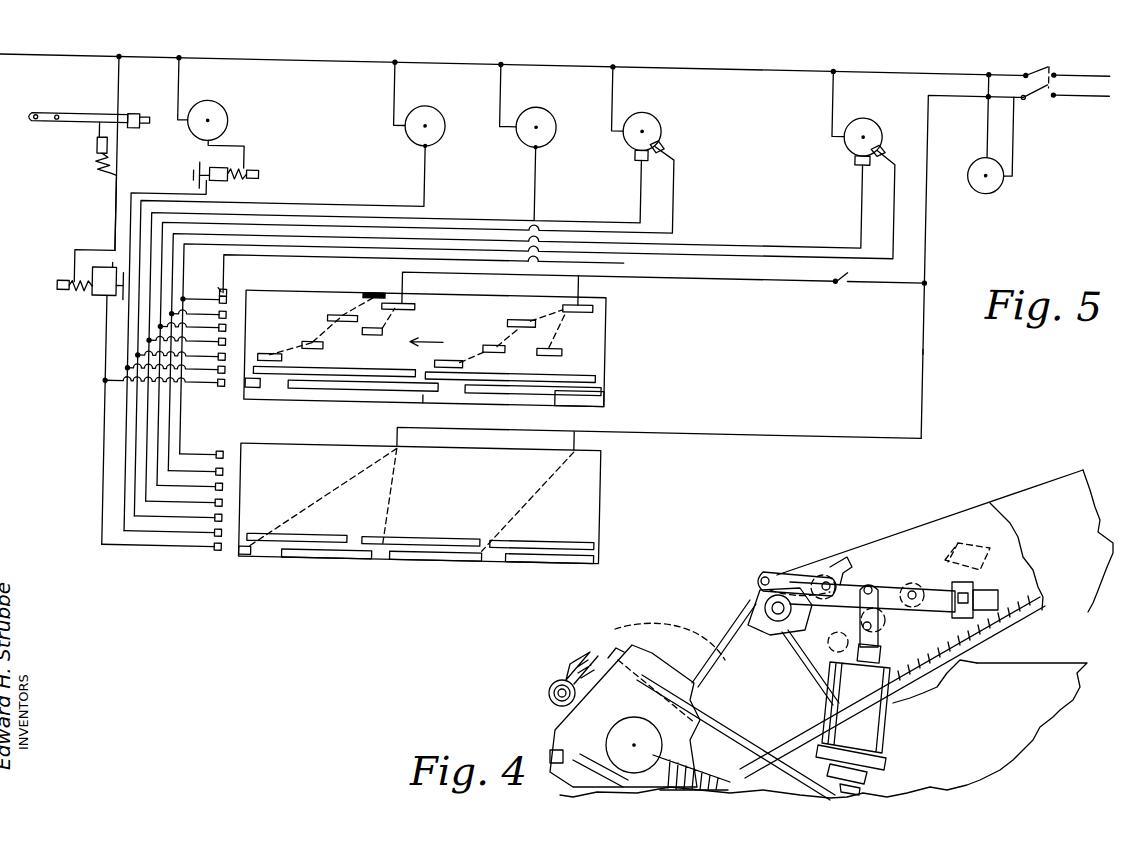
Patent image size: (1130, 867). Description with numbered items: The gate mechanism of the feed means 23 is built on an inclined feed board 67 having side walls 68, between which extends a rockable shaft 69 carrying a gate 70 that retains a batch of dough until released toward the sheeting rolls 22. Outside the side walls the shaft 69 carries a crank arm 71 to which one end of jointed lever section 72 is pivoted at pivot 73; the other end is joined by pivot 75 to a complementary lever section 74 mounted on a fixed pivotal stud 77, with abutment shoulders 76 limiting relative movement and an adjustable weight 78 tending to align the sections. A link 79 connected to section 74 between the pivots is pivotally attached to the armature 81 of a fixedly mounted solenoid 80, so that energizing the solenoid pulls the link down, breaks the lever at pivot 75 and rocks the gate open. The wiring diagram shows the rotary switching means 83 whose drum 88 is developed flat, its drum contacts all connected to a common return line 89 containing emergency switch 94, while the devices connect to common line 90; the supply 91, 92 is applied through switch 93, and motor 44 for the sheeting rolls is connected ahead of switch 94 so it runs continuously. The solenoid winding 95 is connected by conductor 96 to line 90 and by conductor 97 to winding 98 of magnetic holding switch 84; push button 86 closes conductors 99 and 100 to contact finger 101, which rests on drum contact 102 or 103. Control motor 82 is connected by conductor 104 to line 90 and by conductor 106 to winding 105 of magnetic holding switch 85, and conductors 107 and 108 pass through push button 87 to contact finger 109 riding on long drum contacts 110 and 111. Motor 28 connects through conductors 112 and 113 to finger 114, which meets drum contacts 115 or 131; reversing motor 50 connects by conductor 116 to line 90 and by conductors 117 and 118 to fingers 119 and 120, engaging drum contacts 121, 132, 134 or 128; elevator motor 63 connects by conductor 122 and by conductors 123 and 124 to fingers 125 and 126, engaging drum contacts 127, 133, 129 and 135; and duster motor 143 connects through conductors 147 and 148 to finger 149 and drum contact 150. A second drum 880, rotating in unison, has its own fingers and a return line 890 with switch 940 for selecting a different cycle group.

In FIG. 5, the common conductor line 90 is at (900, 54).
In FIG. 5, the switch 93 is at (1040, 50).
In FIG. 5, the source of electrical supply 92 is at (1092, 52).
In FIG. 5, the source of electrical supply 91 is at (1100, 75).
In FIG. 5, the conductor 96 is at (120, 84).
In FIG. 5, the conductor 97 is at (116, 212).
In FIG. 5, the armature 81 is at (92, 123).
In FIG. 4, the armature 81 is at (880, 652).
In FIG. 5, the solenoid 80 is at (86, 150).
In FIG. 4, the solenoid 80 is at (886, 722).
In FIG. 5, the solenoid coil or winding 95 is at (116, 154).
In FIG. 5, the conductor 104 is at (181, 78).
In FIG. 5, the control motor 82 is at (228, 108).
In FIG. 5, the conductor 106 is at (231, 149).
In FIG. 5, the conductor 107 is at (224, 162).
In FIG. 5, the momentary push-button switch 87 is at (200, 165).
In FIG. 5, the magnetic holding switch 85 is at (253, 163).
In FIG. 5, the winding 105 is at (252, 175).
In FIG. 5, the conductor 108 is at (142, 190).
In FIG. 5, the conductor 113 is at (432, 168).
In FIG. 5, the conductor 117 is at (560, 209).
In FIG. 5, the conductor 118 is at (678, 182).
In FIG. 5, the conductor 123 is at (864, 186).
In FIG. 5, the conductor 124 is at (897, 206).
In FIG. 5, the conductor 148 is at (533, 198).
In FIG. 5, the contact finger 126 is at (408, 280).
In FIG. 5, the contact finger 149 is at (233, 287).
In FIG. 5, the switch 94 is at (856, 262).
In FIG. 5, the common return line 89 is at (931, 207).
In FIG. 5, the switch 940 is at (930, 333).
In FIG. 5, the return line 890 is at (776, 420).
In FIG. 5, the conductor 112 is at (398, 84).
In FIG. 5, the motor 28 is at (445, 106).
In FIG. 5, the conductor 147 is at (503, 84).
In FIG. 5, the motor 143 is at (556, 106).
In FIG. 5, the conductor 116 is at (615, 82).
In FIG. 5, the motor 50 is at (663, 118).
In FIG. 5, the conductor 122 is at (838, 83).
In FIG. 5, the elevator motor 63 is at (883, 112).
In FIG. 5, the motor 44 is at (1002, 167).
In FIG. 5, the winding 98 is at (72, 290).
In FIG. 5, the magnetic holding switch 84 is at (95, 303).
In FIG. 5, the momentary push-button switch 86 is at (123, 303).
In FIG. 5, the conductor 99 is at (106, 263).
In FIG. 5, the conductor 100 is at (112, 378).
In FIG. 5, the contact finger 125 is at (204, 305).
In FIG. 5, the contact finger 120 is at (197, 320).
In FIG. 5, the contact finger 119 is at (192, 332).
In FIG. 5, the contact finger 114 is at (186, 347).
In FIG. 5, the rotary switching means 83 is at (236, 409).
In FIG. 5, the contact finger 109 is at (175, 374).
In FIG. 5, the contact finger 101 is at (220, 384).
In FIG. 5, the drum 88 is at (316, 395).
In FIG. 5, the drum contact 150 is at (368, 284).
In FIG. 5, the drum contact 129 is at (398, 293).
In FIG. 5, the drum contact 127 is at (336, 308).
In FIG. 5, the drum contact 121 is at (314, 335).
In FIG. 5, the drum contact 115 is at (274, 348).
In FIG. 5, the drum contact 128 is at (374, 328).
In FIG. 5, the drum contact 131 is at (449, 351).
In FIG. 5, the drum contact 132 is at (494, 335).
In FIG. 5, the drum contact 133 is at (525, 310).
In FIG. 5, the drum contact 134 is at (556, 336).
In FIG. 5, the drum contact 135 is at (590, 293).
In FIG. 5, the drum contact 110 is at (296, 364).
In FIG. 5, the drum contact 111 is at (490, 365).
In FIG. 5, the drum contact 102 is at (260, 383).
In FIG. 5, the drum contact 103 is at (432, 392).
In FIG. 5, the drum 880 is at (381, 552).
In FIG. 4, the feed means 23 is at (1002, 492).
In FIG. 4, the side walls 68 is at (1046, 500).
In FIG. 4, the feed board 67 is at (995, 645).
In FIG. 4, the lever section 72 is at (782, 572).
In FIG. 4, the pivot 73 is at (762, 575).
In FIG. 4, the pivot 75 is at (826, 581).
In FIG. 4, the complementary lever section 74 is at (870, 575).
In FIG. 4, the link 79 is at (866, 585).
In FIG. 4, the fixed pivotal stud 77 is at (912, 590).
In FIG. 4, the adjustable weight 78 is at (954, 615).
In FIG. 4, the abutment shoulders 76 is at (866, 584).
In FIG. 4, the rockable shaft 69 is at (771, 606).
In FIG. 4, the crank arm 71 is at (758, 593).
In FIG. 4, the gate 70 is at (642, 630).
In FIG. 4, the sheeting rolls 22 is at (552, 722).